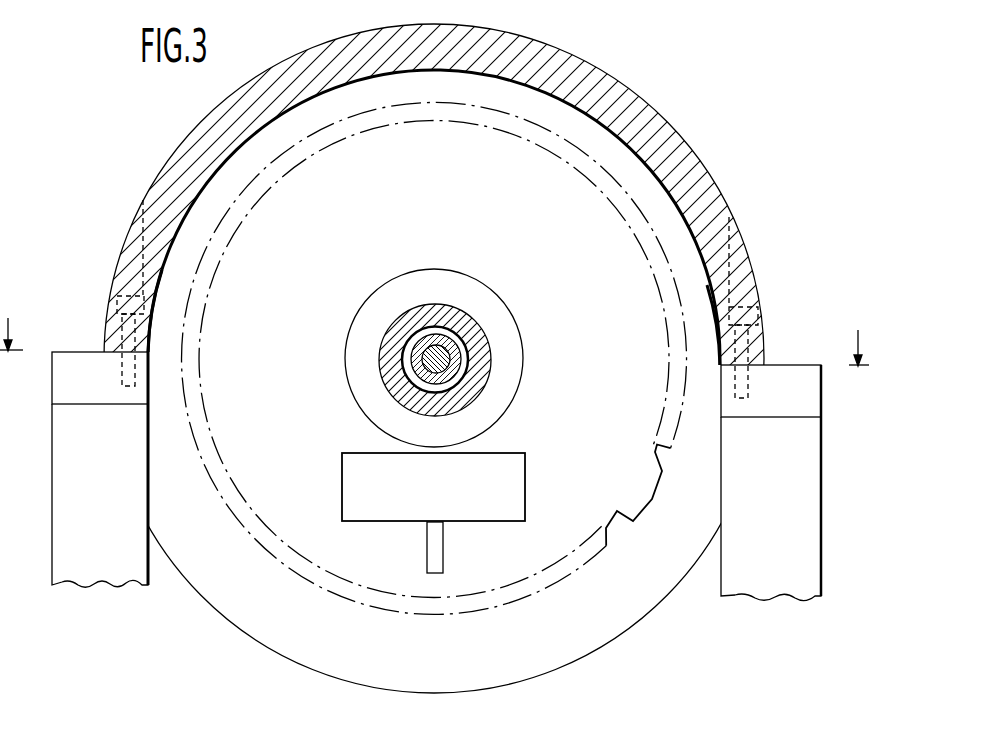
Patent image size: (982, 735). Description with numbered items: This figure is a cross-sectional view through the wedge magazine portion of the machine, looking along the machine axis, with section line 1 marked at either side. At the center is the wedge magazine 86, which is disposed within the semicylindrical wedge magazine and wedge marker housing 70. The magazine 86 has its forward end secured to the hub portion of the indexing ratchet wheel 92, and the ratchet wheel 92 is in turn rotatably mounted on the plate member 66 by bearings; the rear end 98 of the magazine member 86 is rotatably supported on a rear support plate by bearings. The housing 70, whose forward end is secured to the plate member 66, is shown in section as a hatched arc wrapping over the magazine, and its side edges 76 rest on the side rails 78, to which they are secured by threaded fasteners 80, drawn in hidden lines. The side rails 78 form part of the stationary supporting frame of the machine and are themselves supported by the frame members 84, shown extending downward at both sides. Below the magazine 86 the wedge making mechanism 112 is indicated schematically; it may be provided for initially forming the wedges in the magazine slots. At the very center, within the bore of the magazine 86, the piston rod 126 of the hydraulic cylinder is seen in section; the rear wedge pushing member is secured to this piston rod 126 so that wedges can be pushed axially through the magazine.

The section line indicator 1 is at (434, 332).
The plate member 66 is at (556, 634).
The wedge magazine and wedge marker housing 70 is at (596, 72).
The side edges 76 is at (116, 350).
The side rails 78 is at (63, 376).
The threaded fasteners 80 is at (116, 294).
The frame members 84 is at (68, 468).
The wedge magazine 86 is at (493, 293).
The indexing ratchet wheel 92 is at (636, 487).
The rear end 98 is at (482, 338).
The wedge making mechanism 112 is at (526, 486).
The piston rod 126 is at (423, 362).